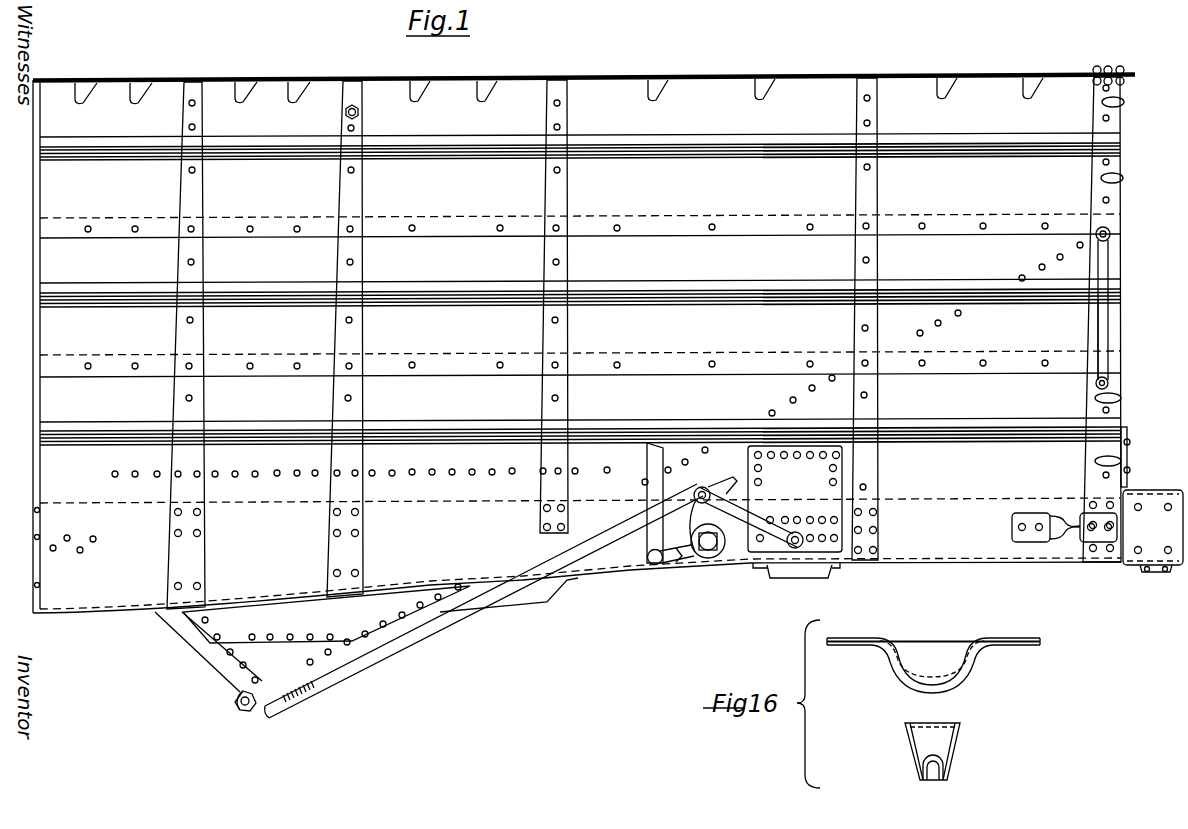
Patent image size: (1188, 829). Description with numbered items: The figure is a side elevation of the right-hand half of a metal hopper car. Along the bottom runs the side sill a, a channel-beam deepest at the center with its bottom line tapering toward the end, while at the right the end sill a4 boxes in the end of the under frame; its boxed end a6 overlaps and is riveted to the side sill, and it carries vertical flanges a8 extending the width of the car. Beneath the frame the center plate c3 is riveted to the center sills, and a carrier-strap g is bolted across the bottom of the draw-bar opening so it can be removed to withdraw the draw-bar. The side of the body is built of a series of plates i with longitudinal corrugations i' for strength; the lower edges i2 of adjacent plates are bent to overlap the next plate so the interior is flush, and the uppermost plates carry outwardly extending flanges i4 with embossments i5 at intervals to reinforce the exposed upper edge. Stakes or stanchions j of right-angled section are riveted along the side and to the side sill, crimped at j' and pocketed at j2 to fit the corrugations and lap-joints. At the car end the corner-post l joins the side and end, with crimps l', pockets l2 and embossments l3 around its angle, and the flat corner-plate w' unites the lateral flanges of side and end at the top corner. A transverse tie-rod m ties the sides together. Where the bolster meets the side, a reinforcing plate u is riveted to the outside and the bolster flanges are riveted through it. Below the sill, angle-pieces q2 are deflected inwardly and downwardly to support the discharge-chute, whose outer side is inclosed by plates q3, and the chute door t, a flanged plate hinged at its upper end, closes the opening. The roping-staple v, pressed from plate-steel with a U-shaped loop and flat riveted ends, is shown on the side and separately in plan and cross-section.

In FIG. 1, the side plates i is at (584, 344).
In FIG. 1, the longitudinal corrugations i' is at (735, 118).
In FIG. 1, the bent lower edges i2 is at (675, 230).
In FIG. 1, the outwardly extending flanges i4 is at (811, 79).
In FIG. 1, the embossments i5 is at (776, 90).
In FIG. 1, the stakes or stanchions j is at (471, 343).
In FIG. 1, the pockets j2 is at (868, 222).
In FIG. 1, the crimps j' is at (841, 313).
In FIG. 1, the transverse tie-rods m is at (361, 113).
In FIG. 1, the corner-posts l is at (1112, 319).
In FIG. 1, the crimps l' is at (1124, 120).
In FIG. 1, the pockets l2 is at (1115, 358).
In FIG. 1, the embossments l3 is at (1123, 178).
In FIG. 1, the flat corner-plates w' is at (1120, 61).
In FIG. 1, the side sill a is at (973, 526).
In FIG. 1, the end sill a4 is at (1155, 489).
In FIG. 1, the boxed end of end sill a6 is at (1153, 527).
In FIG. 1, the vertical flanges a8 is at (1128, 445).
In FIG. 1, the carrier-strap g is at (1160, 573).
In FIG. 1, the roping-staple v is at (1068, 533).
In FIG. 16, the roping-staple v is at (962, 676).
In FIG. 1, the reinforcing plates u is at (795, 499).
In FIG. 1, the center plate c3 is at (813, 566).
In FIG. 1, the angle-pieces q2 is at (368, 663).
In FIG. 1, the outer chute plates q3 is at (335, 626).
In FIG. 1, the door t is at (197, 647).